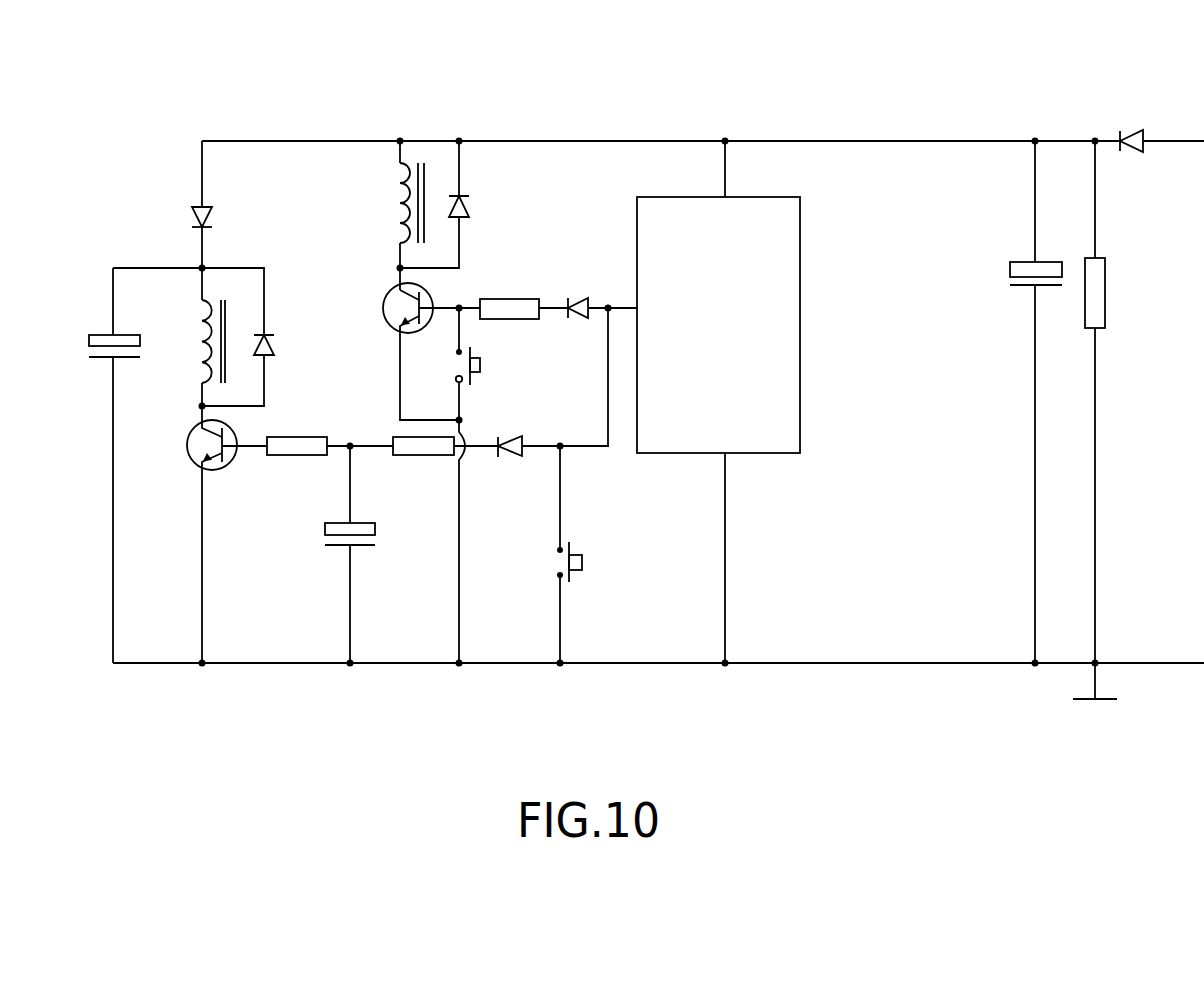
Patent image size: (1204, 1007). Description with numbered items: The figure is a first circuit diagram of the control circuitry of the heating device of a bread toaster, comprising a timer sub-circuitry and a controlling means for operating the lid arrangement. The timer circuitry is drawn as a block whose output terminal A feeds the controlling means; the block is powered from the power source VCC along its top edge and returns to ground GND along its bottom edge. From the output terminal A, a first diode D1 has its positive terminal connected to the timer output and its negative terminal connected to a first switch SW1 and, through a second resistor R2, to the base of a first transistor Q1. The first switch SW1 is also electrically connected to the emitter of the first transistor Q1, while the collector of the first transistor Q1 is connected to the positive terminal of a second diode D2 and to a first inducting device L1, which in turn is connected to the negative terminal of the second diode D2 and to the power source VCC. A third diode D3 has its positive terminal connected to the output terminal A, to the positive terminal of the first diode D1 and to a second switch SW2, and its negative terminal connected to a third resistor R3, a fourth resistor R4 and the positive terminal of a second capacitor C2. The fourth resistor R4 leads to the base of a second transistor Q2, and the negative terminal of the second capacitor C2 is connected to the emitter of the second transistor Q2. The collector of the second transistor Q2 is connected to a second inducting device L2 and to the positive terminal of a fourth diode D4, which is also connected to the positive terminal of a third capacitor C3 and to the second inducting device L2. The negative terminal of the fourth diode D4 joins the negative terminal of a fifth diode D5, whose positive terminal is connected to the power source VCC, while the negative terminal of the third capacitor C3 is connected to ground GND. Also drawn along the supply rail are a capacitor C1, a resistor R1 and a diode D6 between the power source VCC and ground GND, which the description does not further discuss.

The power source VCC is at (661, 145).
The ground GND is at (658, 576).
The output terminal of the timer circuitry A is at (694, 325).
The capacitor C1 is at (1033, 402).
The second capacitor C2 is at (359, 555).
The third capacitor C3 is at (138, 465).
The first diode D1 is at (580, 290).
The second diode D2 is at (454, 203).
The third diode D3 is at (549, 468).
The fourth diode D4 is at (257, 337).
The fifth diode D5 is at (219, 206).
The diode D6 is at (1162, 120).
The first inducting device L1 is at (395, 214).
The second inducting device L2 is at (194, 344).
The first transistor Q1 is at (401, 353).
The second transistor Q2 is at (190, 543).
The resistor R1 is at (1111, 402).
The second resistor R2 is at (493, 287).
The third resistor R3 is at (424, 466).
The fourth resistor R4 is at (286, 466).
The first switch SW1 is at (495, 487).
The second switch SW2 is at (536, 555).